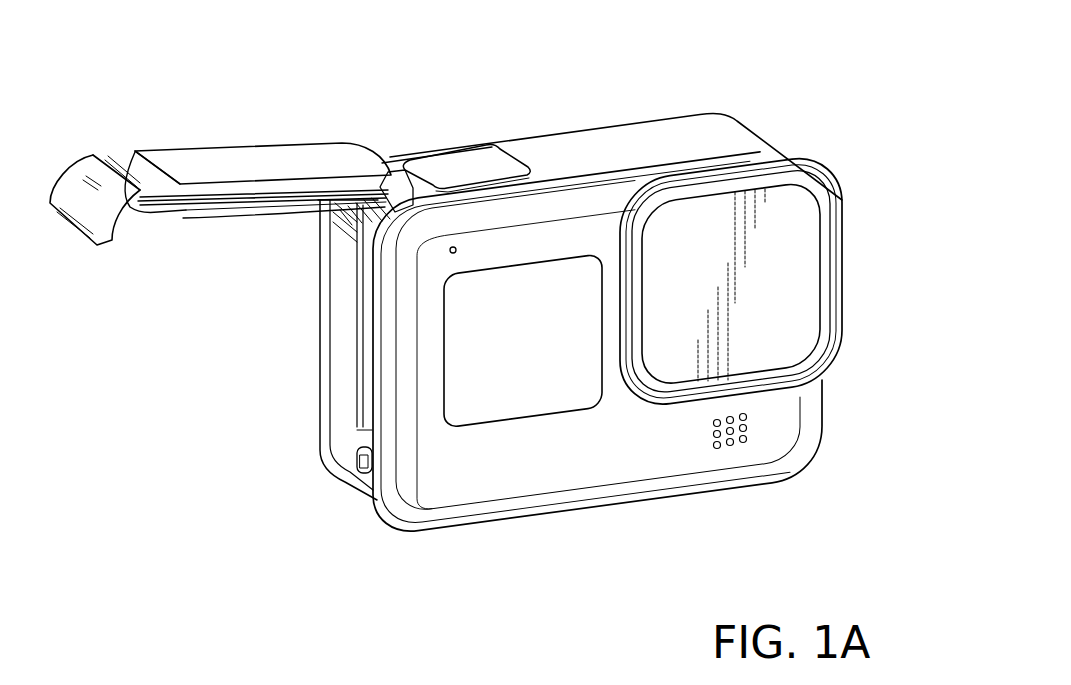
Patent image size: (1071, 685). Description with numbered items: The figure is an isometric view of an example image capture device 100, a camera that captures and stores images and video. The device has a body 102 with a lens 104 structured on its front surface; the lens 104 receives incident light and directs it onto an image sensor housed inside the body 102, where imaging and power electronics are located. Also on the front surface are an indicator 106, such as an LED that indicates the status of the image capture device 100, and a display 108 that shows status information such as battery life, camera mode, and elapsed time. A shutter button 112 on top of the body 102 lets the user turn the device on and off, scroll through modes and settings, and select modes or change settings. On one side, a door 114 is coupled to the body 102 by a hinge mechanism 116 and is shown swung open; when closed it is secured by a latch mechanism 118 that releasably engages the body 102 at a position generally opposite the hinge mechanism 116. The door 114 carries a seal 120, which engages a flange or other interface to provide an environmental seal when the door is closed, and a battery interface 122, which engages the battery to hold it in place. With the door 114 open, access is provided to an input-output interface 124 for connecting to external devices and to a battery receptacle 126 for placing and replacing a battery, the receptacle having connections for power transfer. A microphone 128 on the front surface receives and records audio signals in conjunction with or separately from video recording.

The image capture device 100 is at (806, 45).
The body 102 is at (637, 133).
The lens 104 is at (805, 283).
The indicator 106 is at (450, 252).
The display 108 is at (527, 397).
The shutter button 112 is at (422, 158).
The door 114 is at (272, 157).
The hinge mechanism 116 is at (390, 170).
The latch mechanism 118 is at (73, 190).
The seal 120 is at (160, 205).
The battery interface 122 is at (214, 214).
The input-output (I/O) interface 124 is at (357, 458).
The battery receptacle 126 is at (362, 240).
The microphone 128 is at (731, 446).